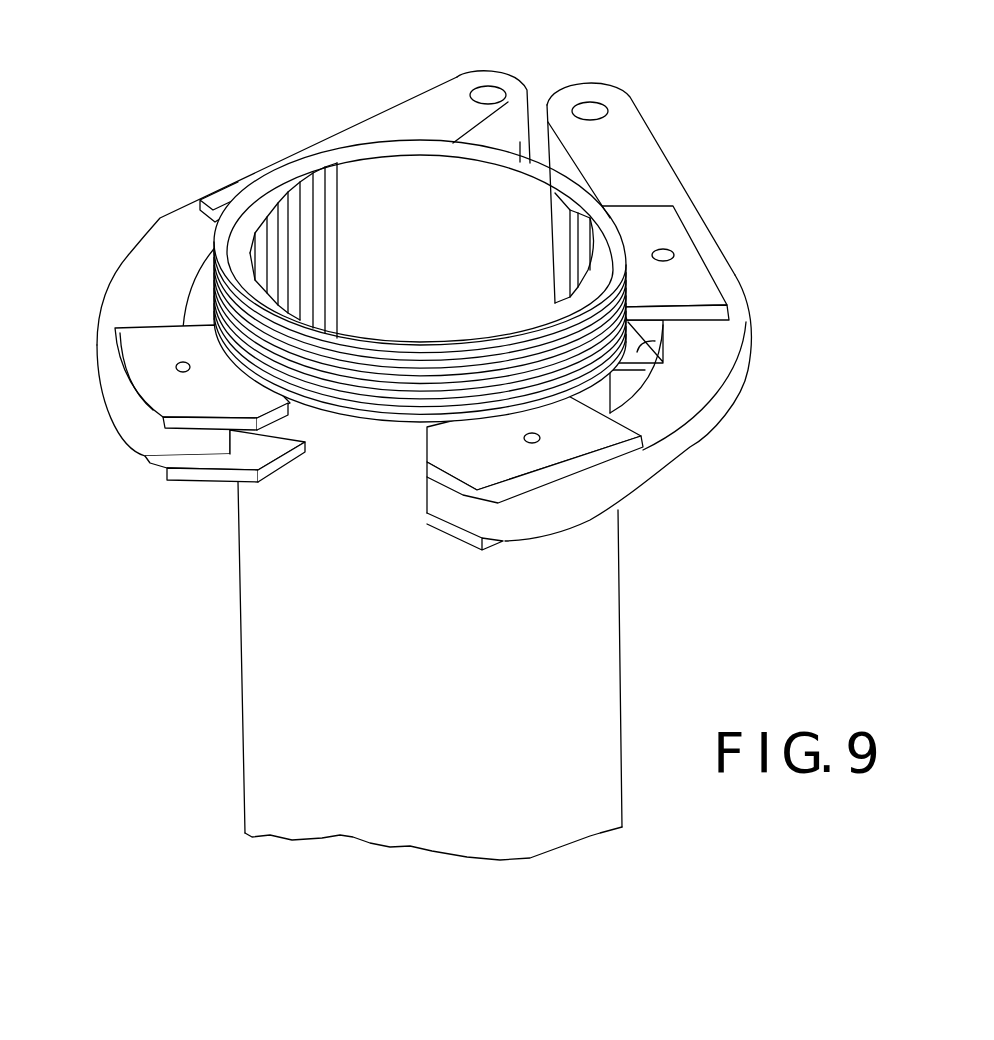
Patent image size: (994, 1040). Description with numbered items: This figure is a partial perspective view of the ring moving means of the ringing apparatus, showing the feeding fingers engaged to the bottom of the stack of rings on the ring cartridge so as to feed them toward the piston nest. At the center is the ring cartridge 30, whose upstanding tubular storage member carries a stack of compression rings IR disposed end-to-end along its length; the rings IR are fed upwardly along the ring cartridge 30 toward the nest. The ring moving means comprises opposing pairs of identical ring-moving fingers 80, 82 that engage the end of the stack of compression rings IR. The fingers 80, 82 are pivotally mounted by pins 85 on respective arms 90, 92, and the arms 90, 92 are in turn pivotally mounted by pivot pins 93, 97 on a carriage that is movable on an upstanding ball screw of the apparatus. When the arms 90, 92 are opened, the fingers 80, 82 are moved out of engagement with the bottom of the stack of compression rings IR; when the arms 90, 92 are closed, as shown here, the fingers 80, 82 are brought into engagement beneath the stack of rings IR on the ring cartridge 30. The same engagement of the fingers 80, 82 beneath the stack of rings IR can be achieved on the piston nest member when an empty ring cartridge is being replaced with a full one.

The ring cartridge 30 is at (257, 672).
The ring-moving finger 80 is at (236, 191).
The ring-moving finger 82 is at (715, 301).
The pin 85 is at (186, 374).
The arm 90 is at (137, 267).
The arm 92 is at (731, 352).
The pivot pin 93 is at (488, 90).
The pivot pin 97 is at (591, 108).
The compression rings IR is at (377, 430).